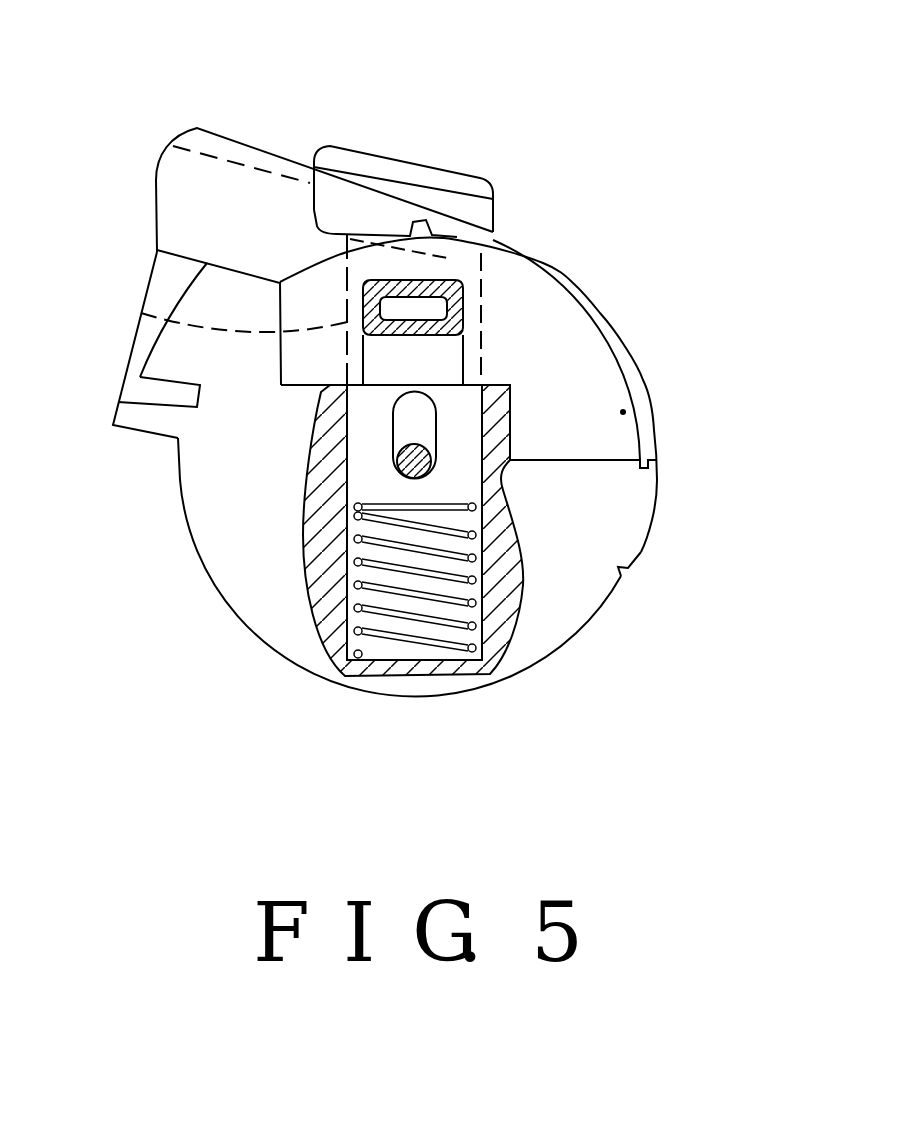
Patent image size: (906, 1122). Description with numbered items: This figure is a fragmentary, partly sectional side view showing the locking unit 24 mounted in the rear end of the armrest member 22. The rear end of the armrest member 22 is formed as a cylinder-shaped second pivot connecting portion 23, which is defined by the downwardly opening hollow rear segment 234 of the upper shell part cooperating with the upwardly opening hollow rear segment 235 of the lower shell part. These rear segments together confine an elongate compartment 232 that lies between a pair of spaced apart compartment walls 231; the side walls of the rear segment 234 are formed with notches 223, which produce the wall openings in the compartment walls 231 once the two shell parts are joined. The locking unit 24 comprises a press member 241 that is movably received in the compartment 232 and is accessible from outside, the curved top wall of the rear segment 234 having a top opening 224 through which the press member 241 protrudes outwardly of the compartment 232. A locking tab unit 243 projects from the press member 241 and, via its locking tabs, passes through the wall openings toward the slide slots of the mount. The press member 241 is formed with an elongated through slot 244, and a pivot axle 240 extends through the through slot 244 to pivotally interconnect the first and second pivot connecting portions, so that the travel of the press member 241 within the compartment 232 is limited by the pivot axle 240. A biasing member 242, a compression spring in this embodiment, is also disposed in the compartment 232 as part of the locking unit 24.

The armrest member 22 is at (216, 177).
The top opening 224 is at (251, 165).
The compartment 232 is at (138, 313).
The press member 241 is at (407, 163).
The locking unit 24 is at (522, 165).
The locking tab unit 243 is at (447, 283).
The notch 223 is at (450, 378).
The hollow rear segment of the upper shell part 234 is at (645, 363).
The second pivot connecting portion 23 is at (713, 521).
The hollow rear segment of the lower shell part 235 is at (646, 551).
The compartment wall 231 is at (562, 613).
The pivot axle 240 is at (399, 474).
The elongated through slot 244 is at (412, 431).
The biasing member 242 is at (418, 622).